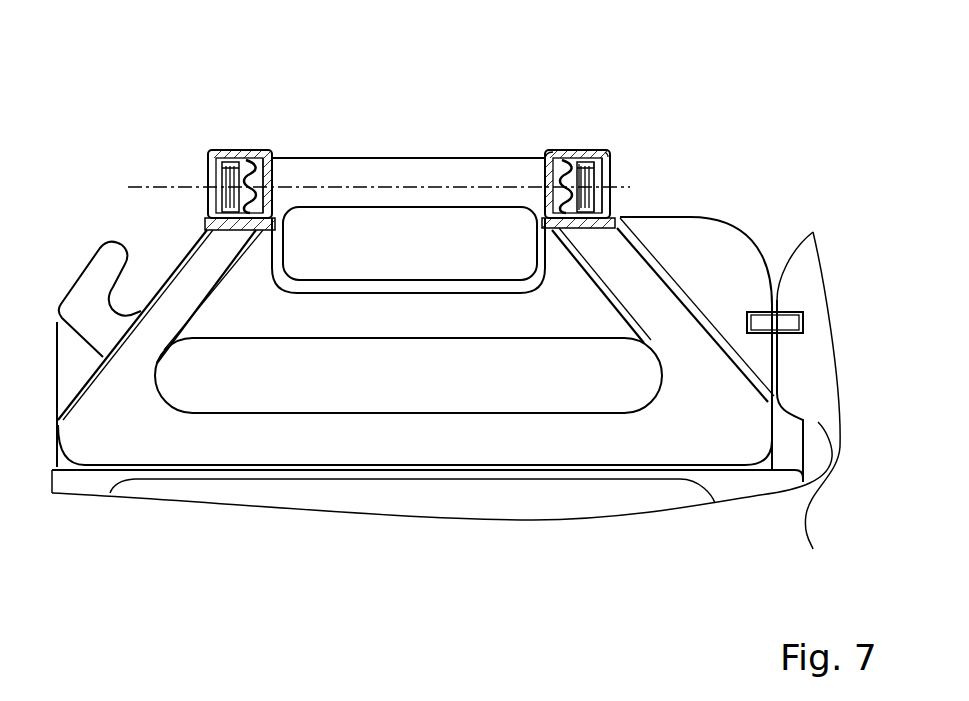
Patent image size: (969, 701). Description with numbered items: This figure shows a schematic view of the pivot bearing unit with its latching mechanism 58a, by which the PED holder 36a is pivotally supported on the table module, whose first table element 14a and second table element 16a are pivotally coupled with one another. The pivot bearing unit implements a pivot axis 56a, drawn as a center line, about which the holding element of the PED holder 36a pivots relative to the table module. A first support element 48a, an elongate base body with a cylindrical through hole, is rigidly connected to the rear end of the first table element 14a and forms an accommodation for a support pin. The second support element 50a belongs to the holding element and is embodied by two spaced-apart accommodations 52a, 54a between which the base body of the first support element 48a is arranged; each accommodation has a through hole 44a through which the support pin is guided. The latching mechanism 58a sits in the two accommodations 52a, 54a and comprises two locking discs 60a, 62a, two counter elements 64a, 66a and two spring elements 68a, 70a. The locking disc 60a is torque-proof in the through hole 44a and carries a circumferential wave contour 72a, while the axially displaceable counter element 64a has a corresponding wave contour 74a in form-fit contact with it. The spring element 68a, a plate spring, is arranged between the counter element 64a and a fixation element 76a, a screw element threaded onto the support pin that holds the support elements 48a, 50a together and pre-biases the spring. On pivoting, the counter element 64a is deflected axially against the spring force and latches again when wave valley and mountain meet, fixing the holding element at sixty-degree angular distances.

The first table element 14a is at (362, 493).
The second table element 16a is at (813, 410).
The PED holder 36a is at (160, 242).
The through hole 44a is at (588, 195).
The first support element 48a is at (467, 180).
The second support element 50a is at (626, 154).
The accommodation 52a is at (601, 298).
The accommodation 54a is at (260, 116).
The pivot axis 56a is at (142, 187).
The latching mechanism 58a is at (624, 138).
The locking disc 60a is at (558, 158).
The locking disc 62a is at (267, 152).
The counter element 64a is at (597, 138).
The counter element 66a is at (252, 158).
The spring element 68a is at (597, 222).
The spring element 70a is at (223, 158).
The wave contour 72a is at (575, 193).
The wave contour 74a is at (547, 150).
The fixation element 76a is at (600, 172).